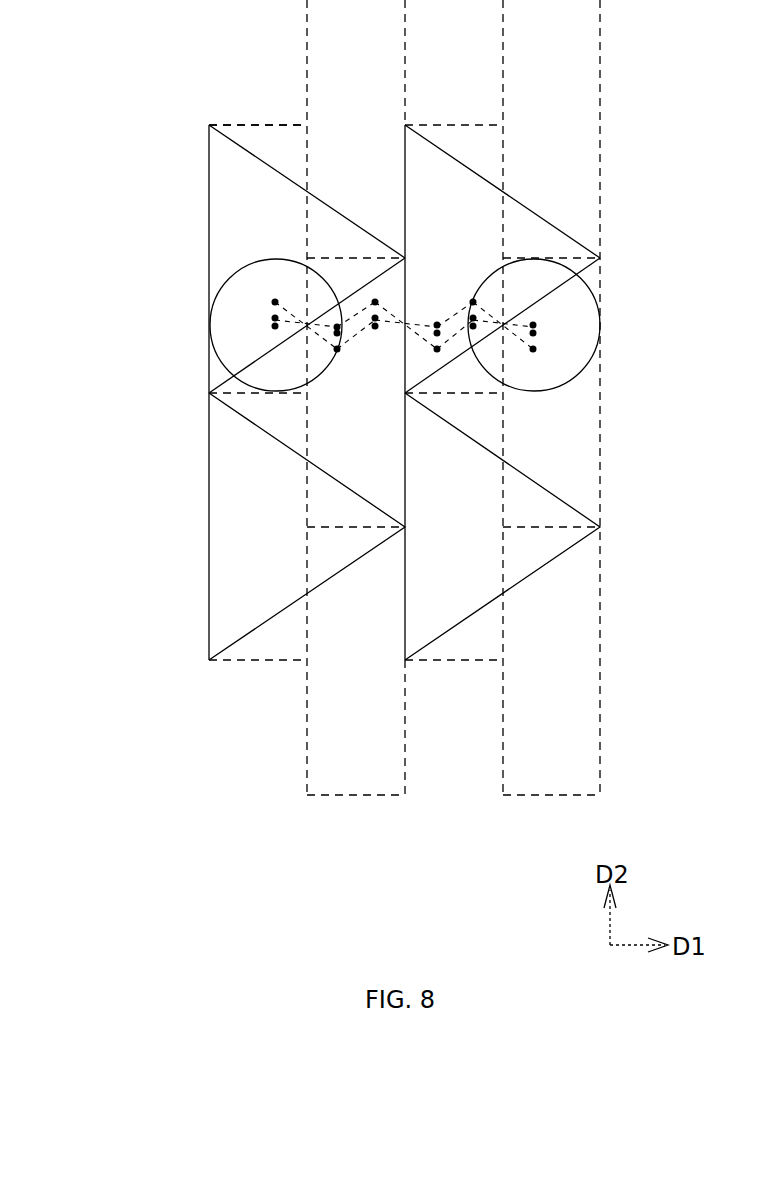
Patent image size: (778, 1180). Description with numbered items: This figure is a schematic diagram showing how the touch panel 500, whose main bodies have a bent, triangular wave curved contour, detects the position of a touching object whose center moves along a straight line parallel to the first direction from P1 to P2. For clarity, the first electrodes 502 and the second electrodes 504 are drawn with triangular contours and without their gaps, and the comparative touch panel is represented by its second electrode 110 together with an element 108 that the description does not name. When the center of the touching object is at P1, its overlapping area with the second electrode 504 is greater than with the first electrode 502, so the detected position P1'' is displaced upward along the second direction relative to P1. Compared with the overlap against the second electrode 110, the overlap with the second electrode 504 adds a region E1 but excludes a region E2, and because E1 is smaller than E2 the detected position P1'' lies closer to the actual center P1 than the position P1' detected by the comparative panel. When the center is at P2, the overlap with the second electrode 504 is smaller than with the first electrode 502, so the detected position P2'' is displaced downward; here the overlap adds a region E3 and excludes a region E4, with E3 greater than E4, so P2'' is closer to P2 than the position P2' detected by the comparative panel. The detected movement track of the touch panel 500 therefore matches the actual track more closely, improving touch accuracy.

The reference line 108 is at (307, 25).
The second electrode 110 is at (258, 125).
The touch panel 500 is at (363, 392).
The first electrode 502 is at (396, 392).
The second electrode 504 is at (235, 216).
The additional region E1 is at (315, 288).
The excluded region E2 is at (258, 373).
The additional region E3 is at (545, 277).
The excluded region E4 is at (489, 362).
The center position of touching object P1 is at (277, 390).
The detected position P1' is at (312, 292).
The detected position P1'' is at (311, 327).
The center position of touching object P2 is at (492, 238).
The detected position P2' is at (497, 391).
The detected position P2'' is at (505, 266).